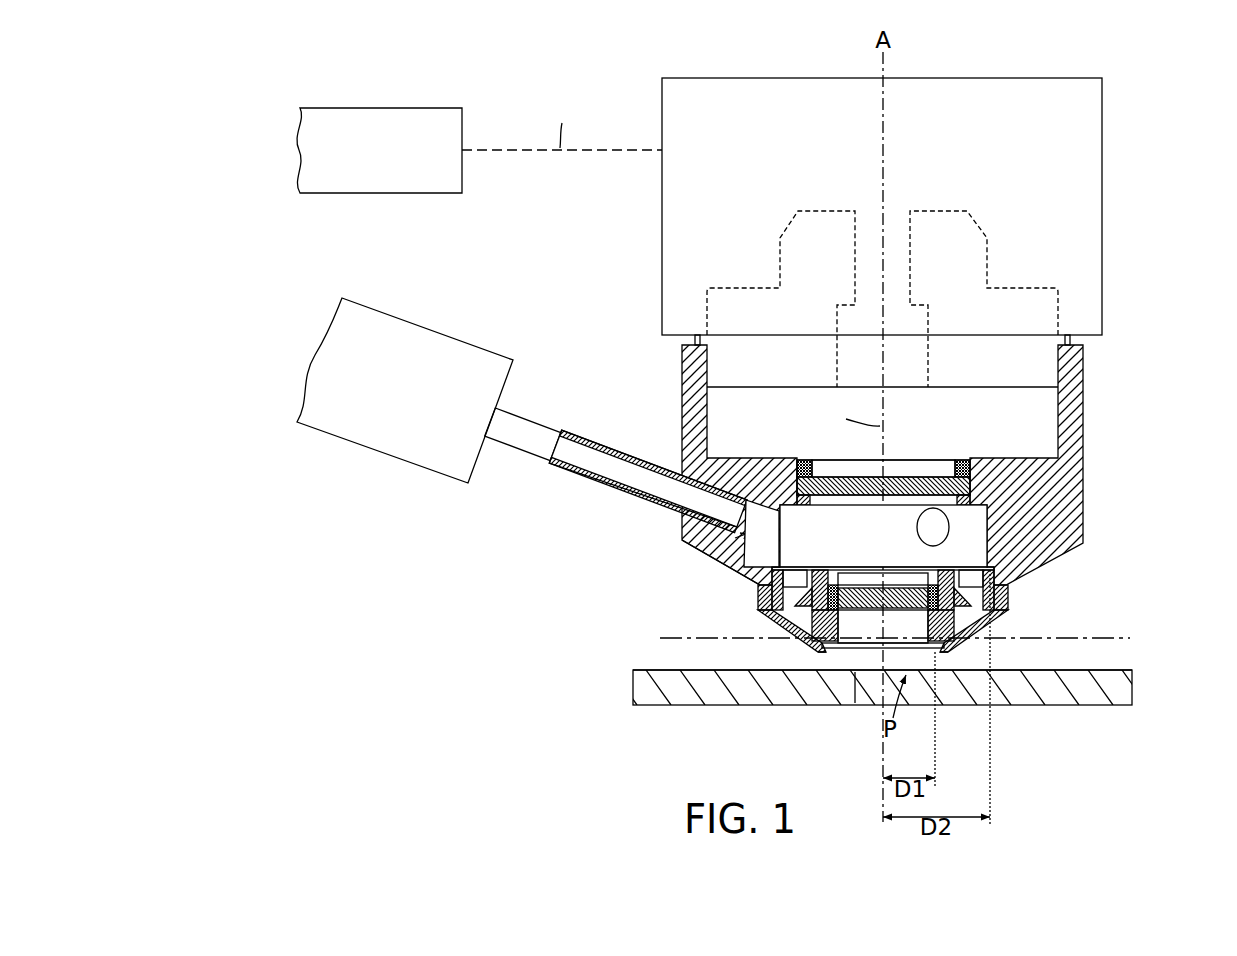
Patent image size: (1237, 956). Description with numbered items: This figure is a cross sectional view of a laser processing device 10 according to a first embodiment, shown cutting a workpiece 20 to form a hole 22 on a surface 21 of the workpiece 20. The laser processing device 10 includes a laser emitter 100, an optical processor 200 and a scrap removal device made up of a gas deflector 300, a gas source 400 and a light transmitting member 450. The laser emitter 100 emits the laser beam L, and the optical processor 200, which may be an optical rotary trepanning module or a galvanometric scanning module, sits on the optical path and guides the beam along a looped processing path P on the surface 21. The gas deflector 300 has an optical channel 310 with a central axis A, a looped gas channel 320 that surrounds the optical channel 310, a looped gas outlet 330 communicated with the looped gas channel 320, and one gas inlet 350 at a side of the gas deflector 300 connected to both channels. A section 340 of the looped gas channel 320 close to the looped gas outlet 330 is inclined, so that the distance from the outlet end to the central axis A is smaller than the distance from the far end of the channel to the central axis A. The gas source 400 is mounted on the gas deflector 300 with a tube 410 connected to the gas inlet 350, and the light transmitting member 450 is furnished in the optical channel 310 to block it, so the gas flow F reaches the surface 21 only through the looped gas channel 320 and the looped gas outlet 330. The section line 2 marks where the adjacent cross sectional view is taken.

The laser processing device 10 is at (198, 76).
The laser emitter 100 is at (375, 108).
The optical processor 200 is at (1035, 78).
The gas deflector 300 is at (1099, 476).
The optical channel 310 is at (949, 449).
The looped gas channel 320 is at (1001, 597).
The looped gas outlet 330 is at (929, 657).
The section of the looped gas channel 340 is at (942, 657).
The gas inlet 350 is at (722, 561).
The gas source 400 is at (430, 329).
The tube 410 is at (543, 425).
The light transmitting member 450 is at (874, 612).
The workpiece 20 is at (1120, 690).
The surface 21 is at (1109, 669).
The hole 22 is at (866, 679).
The line 2- 2 is at (673, 638).